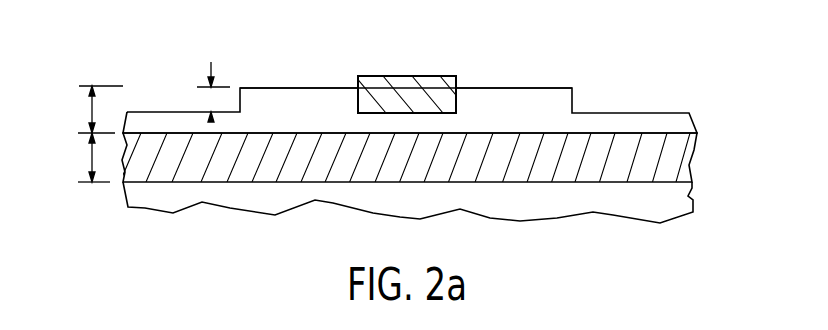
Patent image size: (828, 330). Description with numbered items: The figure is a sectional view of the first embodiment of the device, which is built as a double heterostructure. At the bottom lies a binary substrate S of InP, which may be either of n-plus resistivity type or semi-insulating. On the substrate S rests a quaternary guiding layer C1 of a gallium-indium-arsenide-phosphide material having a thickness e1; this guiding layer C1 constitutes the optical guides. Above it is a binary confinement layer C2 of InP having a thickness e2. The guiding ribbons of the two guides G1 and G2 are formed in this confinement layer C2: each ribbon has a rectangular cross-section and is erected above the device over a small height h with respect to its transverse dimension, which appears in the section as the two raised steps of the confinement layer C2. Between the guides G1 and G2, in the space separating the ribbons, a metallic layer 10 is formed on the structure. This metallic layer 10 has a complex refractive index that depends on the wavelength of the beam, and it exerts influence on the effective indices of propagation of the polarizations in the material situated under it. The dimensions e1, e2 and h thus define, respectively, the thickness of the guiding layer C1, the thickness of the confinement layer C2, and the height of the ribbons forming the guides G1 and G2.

The substrate S is at (678, 197).
The guiding layer C1 is at (678, 162).
The confinement layer C2 is at (655, 123).
The guide G1 is at (268, 76).
The guide G2 is at (496, 76).
The metallic layer 10 is at (399, 64).
The height h is at (211, 100).
The thickness e1 is at (78, 159).
The thickness e2 is at (85, 109).